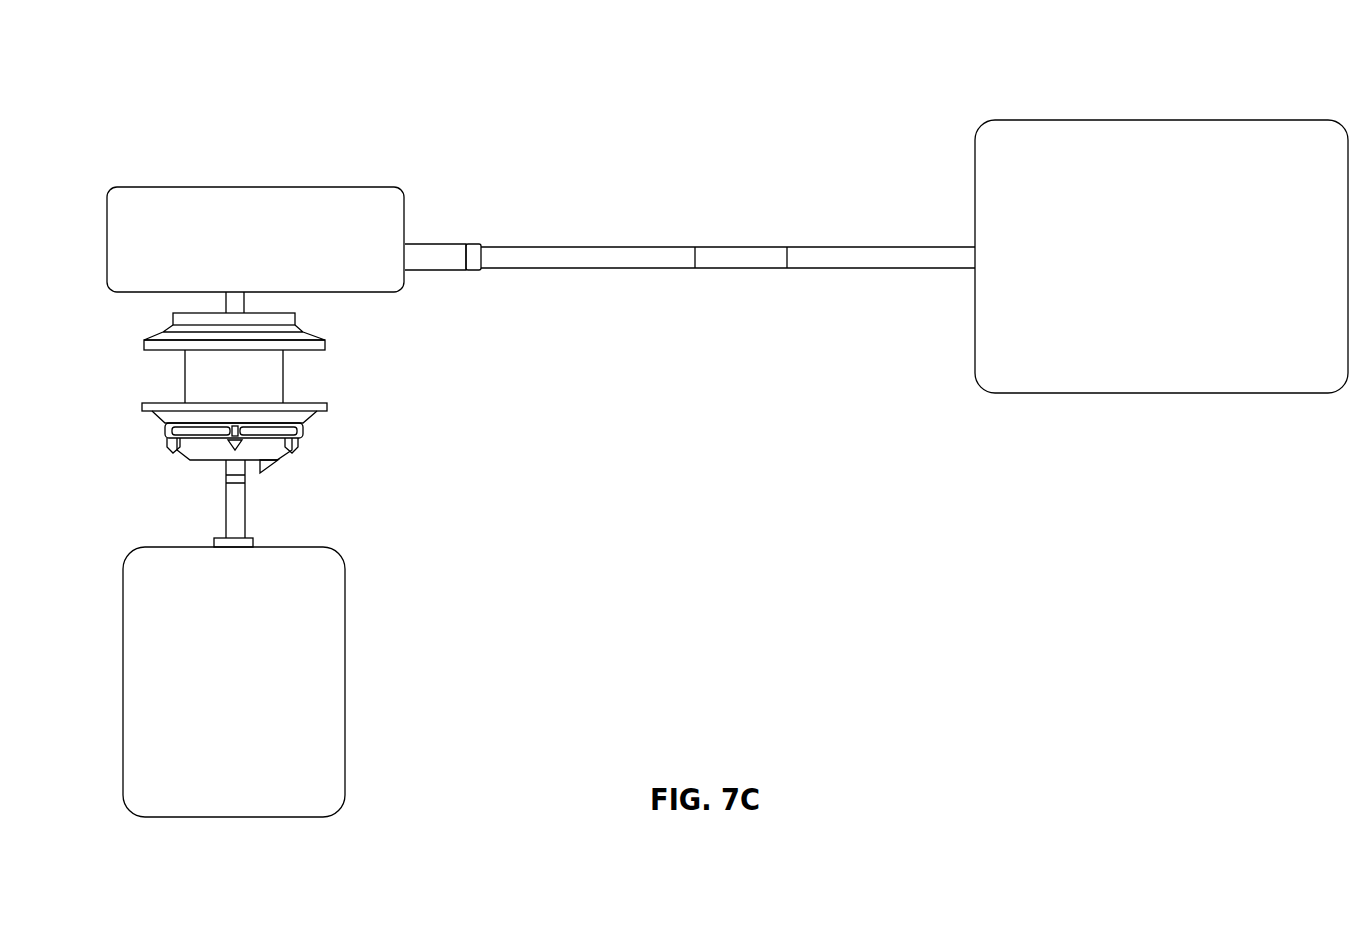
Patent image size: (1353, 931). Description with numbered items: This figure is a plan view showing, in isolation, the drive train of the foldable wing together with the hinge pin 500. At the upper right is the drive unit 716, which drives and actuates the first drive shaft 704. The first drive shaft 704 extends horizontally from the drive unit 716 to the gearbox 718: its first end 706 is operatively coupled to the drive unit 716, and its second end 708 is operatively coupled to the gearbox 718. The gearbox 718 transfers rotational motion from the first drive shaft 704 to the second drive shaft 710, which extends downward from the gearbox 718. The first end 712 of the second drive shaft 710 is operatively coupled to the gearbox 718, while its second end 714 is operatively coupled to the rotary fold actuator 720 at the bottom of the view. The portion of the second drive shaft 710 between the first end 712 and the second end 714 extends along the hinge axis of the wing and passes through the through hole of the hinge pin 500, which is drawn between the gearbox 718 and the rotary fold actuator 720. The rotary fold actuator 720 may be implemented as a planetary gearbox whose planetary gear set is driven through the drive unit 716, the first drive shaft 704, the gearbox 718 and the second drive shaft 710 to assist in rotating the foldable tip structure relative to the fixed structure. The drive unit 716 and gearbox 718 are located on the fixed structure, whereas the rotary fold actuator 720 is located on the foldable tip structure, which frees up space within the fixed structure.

The hinge pin 500 is at (210, 382).
The first drive shaft 704 is at (668, 245).
The first end 706 is at (962, 258).
The second end 708 is at (422, 252).
The second drive shaft 710 is at (222, 492).
The first end 712 is at (213, 303).
The second end 714 is at (233, 537).
The drive unit 716 is at (1185, 119).
The gearbox 718 is at (272, 186).
The rotary fold actuator 720 is at (345, 722).